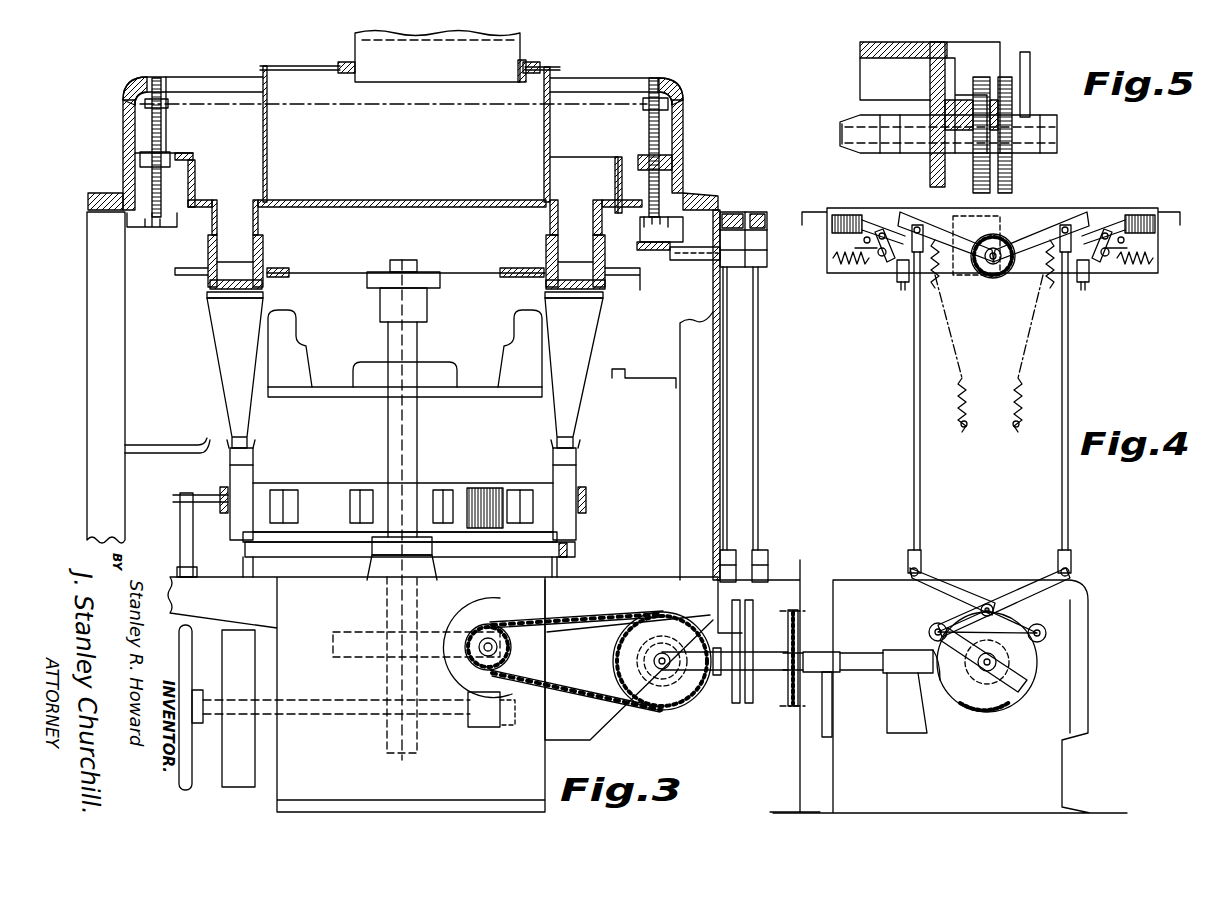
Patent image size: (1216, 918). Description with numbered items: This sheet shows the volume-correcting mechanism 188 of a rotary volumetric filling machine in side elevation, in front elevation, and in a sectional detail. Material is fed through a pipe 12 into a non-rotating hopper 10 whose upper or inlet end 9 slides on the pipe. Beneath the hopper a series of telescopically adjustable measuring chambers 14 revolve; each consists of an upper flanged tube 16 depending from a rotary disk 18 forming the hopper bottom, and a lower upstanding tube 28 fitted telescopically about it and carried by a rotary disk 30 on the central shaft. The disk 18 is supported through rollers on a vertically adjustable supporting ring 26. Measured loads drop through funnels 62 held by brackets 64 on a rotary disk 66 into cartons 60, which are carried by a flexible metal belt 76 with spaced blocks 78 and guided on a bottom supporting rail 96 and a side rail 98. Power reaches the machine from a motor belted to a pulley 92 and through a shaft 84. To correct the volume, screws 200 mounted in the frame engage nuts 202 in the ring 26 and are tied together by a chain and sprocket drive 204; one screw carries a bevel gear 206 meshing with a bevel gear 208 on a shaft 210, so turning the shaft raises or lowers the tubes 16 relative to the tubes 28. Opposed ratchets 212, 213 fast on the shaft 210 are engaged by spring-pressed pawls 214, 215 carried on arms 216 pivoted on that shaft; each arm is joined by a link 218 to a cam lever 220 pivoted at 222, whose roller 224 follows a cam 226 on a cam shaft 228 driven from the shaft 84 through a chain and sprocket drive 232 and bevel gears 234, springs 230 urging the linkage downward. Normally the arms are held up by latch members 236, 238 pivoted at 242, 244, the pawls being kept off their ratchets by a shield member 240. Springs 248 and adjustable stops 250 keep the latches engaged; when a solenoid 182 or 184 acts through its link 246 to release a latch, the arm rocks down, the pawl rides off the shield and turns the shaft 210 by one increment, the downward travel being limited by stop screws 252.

In FIG. 3, the upper or inlet end of the hopper 9 is at (523, 52).
In FIG. 3, the hopper 10 is at (313, 66).
In FIG. 3, the pipe 12 is at (425, 80).
In FIG. 3, the measuring chambers 14 is at (407, 231).
In FIG. 3, the flanged tubes 16 is at (263, 219).
In FIG. 3, the rotary disk 18 is at (400, 200).
In FIG. 3, the supporting ring 26 is at (140, 158).
In FIG. 3, the upstanding tubes 28 is at (264, 246).
In FIG. 3, the rotary disk 30 is at (373, 273).
In FIG. 3, the cartons 60 is at (237, 473).
In FIG. 3, the funnels 62 is at (612, 412).
In FIG. 3, the brackets 64 is at (290, 357).
In FIG. 3, the rotary disk 66 is at (450, 394).
In FIG. 3, the flexible metal belt 76 is at (475, 490).
In FIG. 3, the spaced blocks 78 is at (357, 497).
In FIG. 3, the shaft 84 is at (485, 640).
In FIG. 3, the pulley 92 is at (240, 768).
In FIG. 3, the bottom supporting rail 96 is at (567, 543).
In FIG. 3, the side rail 98 is at (583, 502).
In FIG. 4, the solenoid 182 is at (830, 215).
In FIG. 4, the solenoid 184 is at (1140, 216).
In FIG. 4, the correcting mechanism 188 is at (761, 171).
In FIG. 3, the screws 200 is at (162, 133).
In FIG. 3, the nuts 202 is at (150, 152).
In FIG. 3, the chain and sprocket drive 204 is at (602, 103).
In FIG. 3, the bevel gear 206 is at (650, 222).
In FIG. 3, the bevel gear 208 is at (663, 280).
In FIG. 5, the bevel gear 208 is at (850, 118).
In FIG. 3, the shaft 210 is at (767, 257).
In FIG. 5, the shaft 210 is at (913, 130).
In FIG. 4, the shaft 210 is at (975, 290).
In FIG. 3, the ratchet 212 is at (757, 300).
In FIG. 5, the ratchet 212 is at (975, 170).
In FIG. 4, the ratchet 212 is at (983, 278).
In FIG. 3, the ratchet 213 is at (737, 287).
In FIG. 5, the ratchet 213 is at (1012, 167).
In FIG. 4, the ratchet 213 is at (1000, 268).
In FIG. 4, the pawl 214 is at (940, 290).
In FIG. 4, the pawl 215 is at (1045, 290).
In FIG. 4, the arms 216 is at (897, 220).
In FIG. 3, the links 218 is at (758, 480).
In FIG. 4, the links 218 is at (1062, 465).
In FIG. 4, the cam levers 220 is at (1053, 573).
In FIG. 4, the pivot 222 is at (930, 628).
In FIG. 3, the roller 224 is at (733, 597).
In FIG. 4, the roller 224 is at (993, 600).
In FIG. 3, the cams 226 is at (750, 687).
In FIG. 4, the cams 226 is at (1008, 692).
In FIG. 3, the cam shaft 228 is at (727, 672).
In FIG. 4, the cam shaft 228 is at (987, 668).
In FIG. 4, the springs 230 is at (1018, 395).
In FIG. 3, the chain and sprocket drive 232 is at (597, 606).
In FIG. 3, the bevel gears 234 is at (668, 695).
In FIG. 4, the bevel gears 234 is at (947, 717).
In FIG. 4, the latch member 236 is at (873, 215).
In FIG. 4, the latch member 238 is at (1105, 213).
In FIG. 3, the shield member 240 is at (760, 205).
In FIG. 5, the shield member 240 is at (1000, 60).
In FIG. 4, the shield member 240 is at (1010, 213).
In FIG. 4, the pivot 242 is at (882, 262).
In FIG. 4, the pivot 244 is at (1106, 262).
In FIG. 4, the links 246 is at (832, 226).
In FIG. 4, the springs 248 is at (845, 260).
In FIG. 4, the adjustable stops 250 is at (860, 260).
In FIG. 4, the stop screws 252 is at (902, 290).